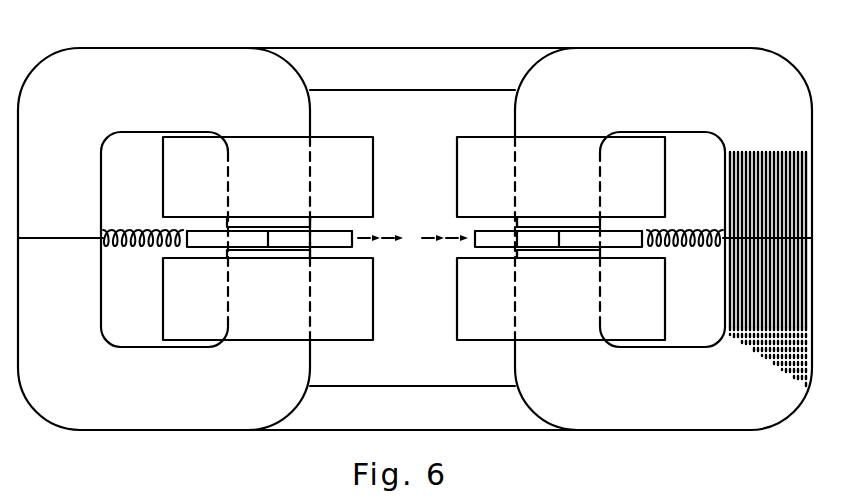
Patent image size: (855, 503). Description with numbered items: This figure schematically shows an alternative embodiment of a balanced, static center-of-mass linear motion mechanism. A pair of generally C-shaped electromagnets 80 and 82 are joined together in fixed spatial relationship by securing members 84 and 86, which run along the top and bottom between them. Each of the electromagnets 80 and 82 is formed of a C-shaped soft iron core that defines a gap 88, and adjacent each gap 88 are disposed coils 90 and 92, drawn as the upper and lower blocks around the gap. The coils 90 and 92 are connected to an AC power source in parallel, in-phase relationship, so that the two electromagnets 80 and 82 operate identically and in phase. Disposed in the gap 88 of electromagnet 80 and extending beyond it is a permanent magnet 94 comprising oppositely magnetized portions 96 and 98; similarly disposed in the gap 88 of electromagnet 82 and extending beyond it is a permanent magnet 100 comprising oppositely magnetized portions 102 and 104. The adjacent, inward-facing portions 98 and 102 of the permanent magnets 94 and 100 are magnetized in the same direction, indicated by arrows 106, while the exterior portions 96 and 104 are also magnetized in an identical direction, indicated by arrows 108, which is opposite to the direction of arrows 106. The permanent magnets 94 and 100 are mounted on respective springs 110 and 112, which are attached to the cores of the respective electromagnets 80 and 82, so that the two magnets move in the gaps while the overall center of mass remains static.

The electromagnet 80 is at (663, 63).
The electromagnet 82 is at (145, 63).
The securing member 84 is at (387, 63).
The securing member 86 is at (490, 417).
The gap 88 is at (262, 247).
The coil 90 is at (373, 188).
The coil 92 is at (373, 298).
The permanent magnet 94 is at (547, 241).
The oppositely magnetized portion 96 is at (628, 237).
The oppositely magnetized portion 98 is at (493, 237).
The permanent magnet 100 is at (281, 241).
The oppositely magnetized portion 102 is at (333, 237).
The oppositely magnetized portion 104 is at (207, 237).
The arrows 106 is at (311, 240).
The arrows 108 is at (226, 240).
The spring 110 is at (687, 232).
The spring 112 is at (130, 228).